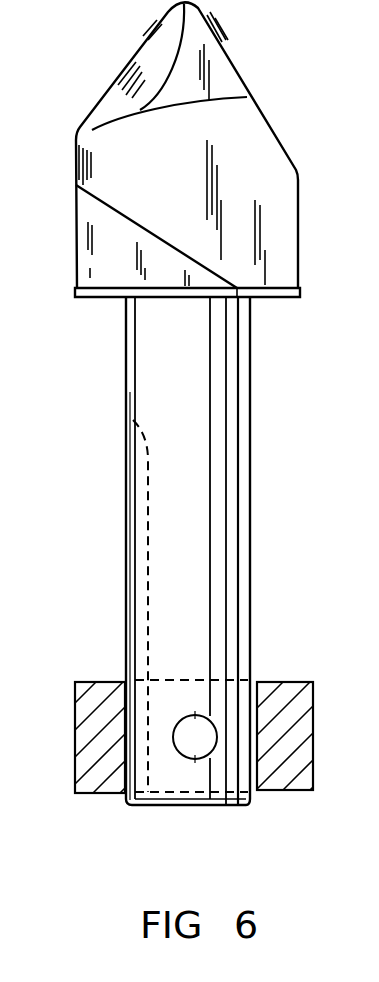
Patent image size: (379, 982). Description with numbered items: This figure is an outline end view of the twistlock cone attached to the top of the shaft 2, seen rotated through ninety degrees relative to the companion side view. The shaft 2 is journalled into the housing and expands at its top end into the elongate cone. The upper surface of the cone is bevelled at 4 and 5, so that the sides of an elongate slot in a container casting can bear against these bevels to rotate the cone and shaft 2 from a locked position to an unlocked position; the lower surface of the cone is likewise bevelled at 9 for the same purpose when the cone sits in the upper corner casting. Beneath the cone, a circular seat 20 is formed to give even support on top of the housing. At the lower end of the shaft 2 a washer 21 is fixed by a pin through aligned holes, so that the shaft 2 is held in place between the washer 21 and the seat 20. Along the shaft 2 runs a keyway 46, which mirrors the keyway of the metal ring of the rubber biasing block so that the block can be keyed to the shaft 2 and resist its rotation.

The shaft 2 is at (147, 376).
The upper bevel 4 is at (213, 68).
The upper bevel 5 is at (150, 60).
The lower bevel 9 is at (113, 258).
The circular seat 20 is at (275, 298).
The washer 21 is at (100, 705).
The keyway in the shaft 46 is at (133, 473).